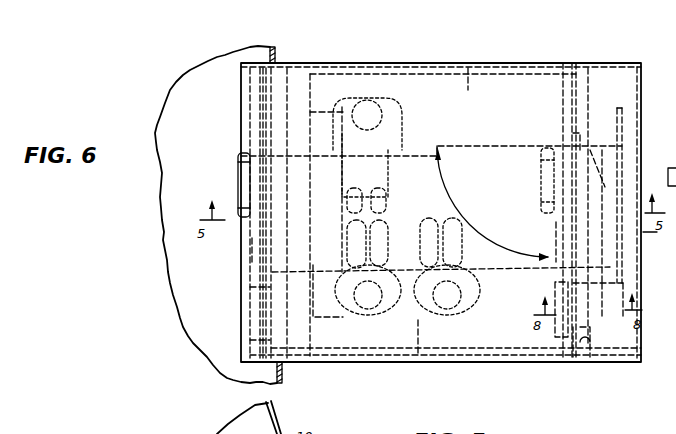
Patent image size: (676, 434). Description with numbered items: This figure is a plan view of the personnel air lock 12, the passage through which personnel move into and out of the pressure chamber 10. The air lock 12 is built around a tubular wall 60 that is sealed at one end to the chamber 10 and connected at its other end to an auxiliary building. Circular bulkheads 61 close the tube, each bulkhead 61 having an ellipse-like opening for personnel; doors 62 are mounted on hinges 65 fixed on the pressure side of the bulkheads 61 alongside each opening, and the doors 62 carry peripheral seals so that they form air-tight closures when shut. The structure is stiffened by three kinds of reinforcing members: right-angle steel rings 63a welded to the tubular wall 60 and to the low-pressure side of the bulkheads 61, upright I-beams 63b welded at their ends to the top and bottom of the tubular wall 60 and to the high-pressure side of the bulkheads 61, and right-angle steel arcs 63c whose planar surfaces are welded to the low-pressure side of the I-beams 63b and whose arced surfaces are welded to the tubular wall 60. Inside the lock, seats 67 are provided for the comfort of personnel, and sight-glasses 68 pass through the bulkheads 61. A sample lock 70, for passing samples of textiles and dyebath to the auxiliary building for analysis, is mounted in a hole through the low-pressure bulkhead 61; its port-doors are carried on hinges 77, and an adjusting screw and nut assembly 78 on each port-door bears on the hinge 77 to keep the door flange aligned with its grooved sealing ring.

The chamber 10 is at (283, 377).
The personnel air lock 12 is at (481, 365).
The tubular wall 60 is at (371, 363).
The circular bulkheads 61 is at (270, 102).
The doors 62 is at (254, 247).
The reinforcing members 63a is at (300, 337).
The reinforcing members 63b is at (301, 183).
The reinforcing members 63c is at (330, 105).
The hinges 65 is at (240, 181).
The seats 67 is at (468, 70).
The sight-glasses 68 is at (258, 318).
The sample lock 70 is at (609, 320).
The hinges 77 is at (658, 243).
The adjusting screw and nut assembly 78 is at (671, 166).